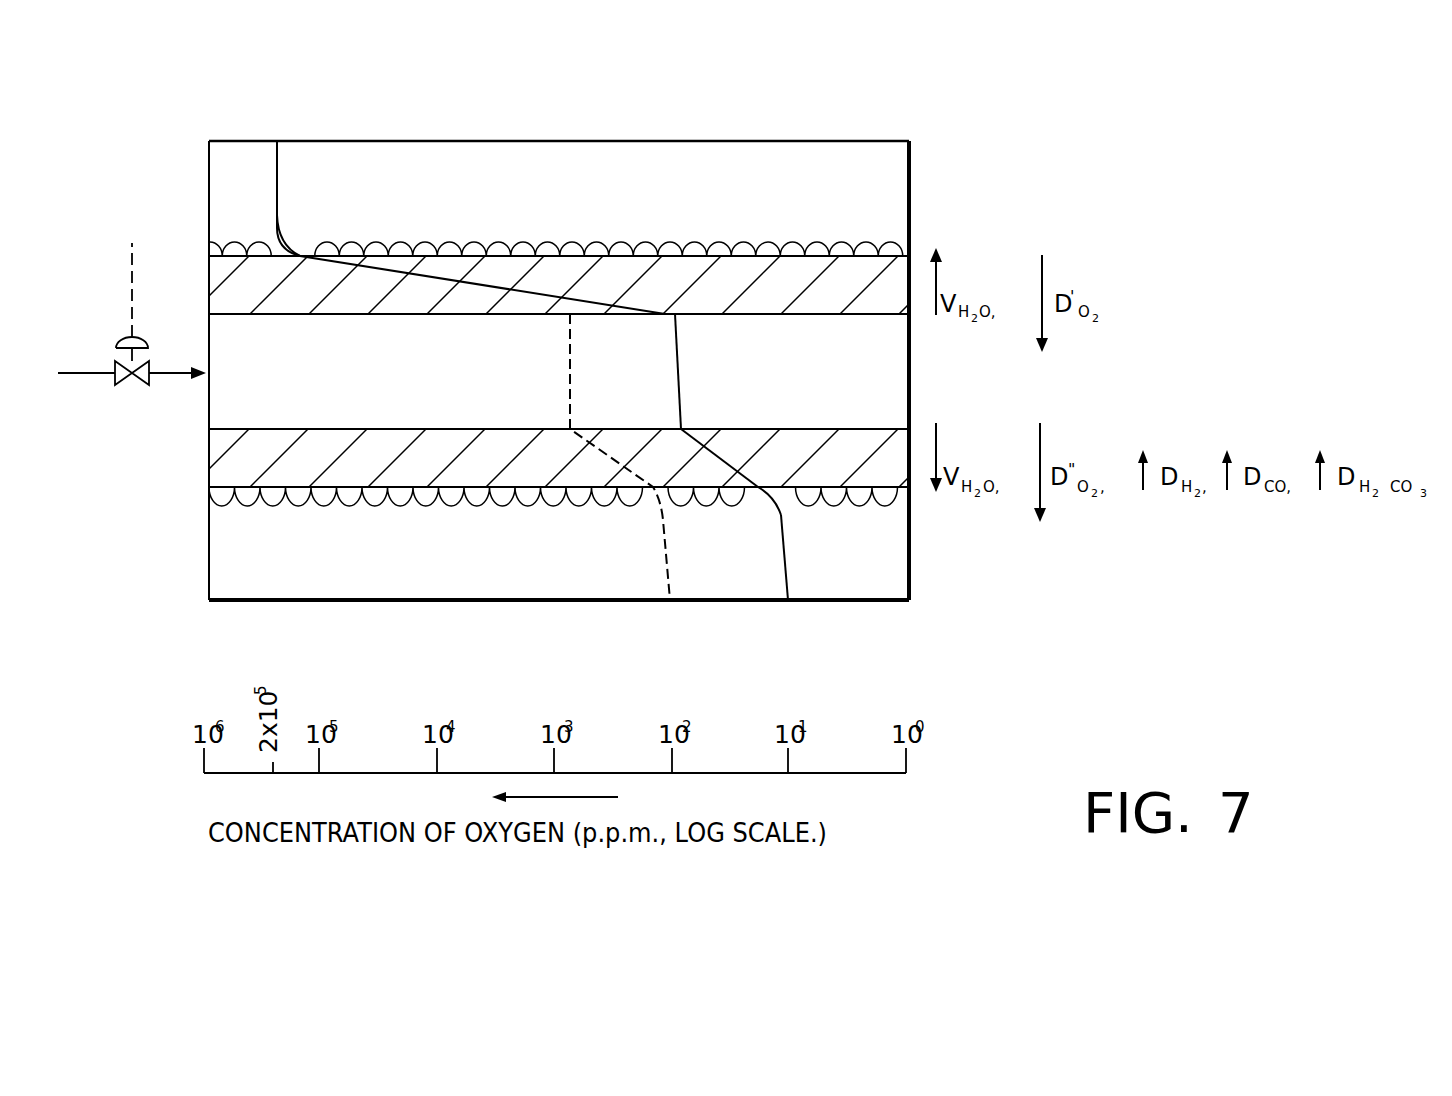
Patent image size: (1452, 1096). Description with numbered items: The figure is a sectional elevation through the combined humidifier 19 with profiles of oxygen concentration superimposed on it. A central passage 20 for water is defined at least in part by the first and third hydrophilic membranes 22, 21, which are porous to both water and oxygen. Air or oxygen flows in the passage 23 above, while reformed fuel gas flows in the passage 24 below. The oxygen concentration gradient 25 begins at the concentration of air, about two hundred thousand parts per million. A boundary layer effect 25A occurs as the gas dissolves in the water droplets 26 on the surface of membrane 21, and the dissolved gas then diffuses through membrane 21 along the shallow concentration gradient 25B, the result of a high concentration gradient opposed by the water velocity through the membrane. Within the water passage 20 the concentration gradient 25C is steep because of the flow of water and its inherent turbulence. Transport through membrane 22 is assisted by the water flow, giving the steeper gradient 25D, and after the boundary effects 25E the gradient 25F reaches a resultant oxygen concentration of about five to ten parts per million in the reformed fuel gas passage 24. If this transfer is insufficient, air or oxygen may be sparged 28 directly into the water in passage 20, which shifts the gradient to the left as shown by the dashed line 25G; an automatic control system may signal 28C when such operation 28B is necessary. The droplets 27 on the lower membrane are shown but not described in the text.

The combined humidifier 19 is at (593, 141).
The central passage 20 is at (291, 415).
The third hydrophilic membrane 21 is at (771, 300).
The first hydrophilic membrane 22 is at (291, 478).
The air passage 23 is at (800, 213).
The reformed fuel gas passage 24 is at (284, 587).
The oxygen concentration gradient 25 is at (277, 157).
The boundary layer effect 25A is at (279, 240).
The shallow concentration gradient 25B is at (441, 282).
The concentration gradient 25C is at (682, 390).
The steeper gradient 25D is at (733, 463).
The boundary effects 25E is at (772, 497).
The concentration gradient 25F is at (787, 557).
The dashed line 25G is at (668, 588).
The water droplets 26 is at (495, 243).
The lower interface structure 27 is at (392, 500).
The sparge 28 is at (77, 375).
The operation 28B is at (119, 344).
The signal 28C is at (131, 252).